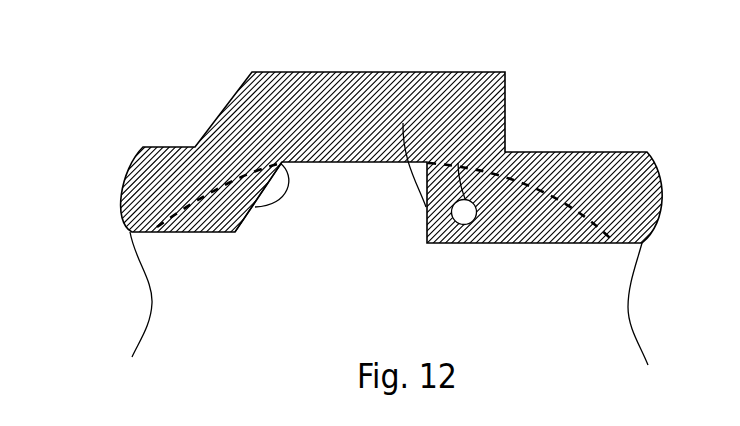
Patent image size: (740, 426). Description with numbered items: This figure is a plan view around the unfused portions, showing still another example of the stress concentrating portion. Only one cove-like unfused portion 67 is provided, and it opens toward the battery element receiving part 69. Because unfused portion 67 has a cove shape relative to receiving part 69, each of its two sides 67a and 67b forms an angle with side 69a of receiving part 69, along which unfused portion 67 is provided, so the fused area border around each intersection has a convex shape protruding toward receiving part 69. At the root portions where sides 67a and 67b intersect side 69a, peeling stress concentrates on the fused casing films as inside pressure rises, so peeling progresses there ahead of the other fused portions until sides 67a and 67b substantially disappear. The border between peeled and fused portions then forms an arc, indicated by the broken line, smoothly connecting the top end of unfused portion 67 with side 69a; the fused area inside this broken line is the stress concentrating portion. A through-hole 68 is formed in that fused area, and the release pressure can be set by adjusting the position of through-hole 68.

The unfused portion 67 is at (328, 200).
The side of unfused portion 67a is at (280, 163).
The side of unfused portion 67b is at (425, 100).
The through-hole 68 is at (473, 145).
The side of battery element receiving part 69a is at (185, 233).
The battery element receiving part 69 is at (578, 317).